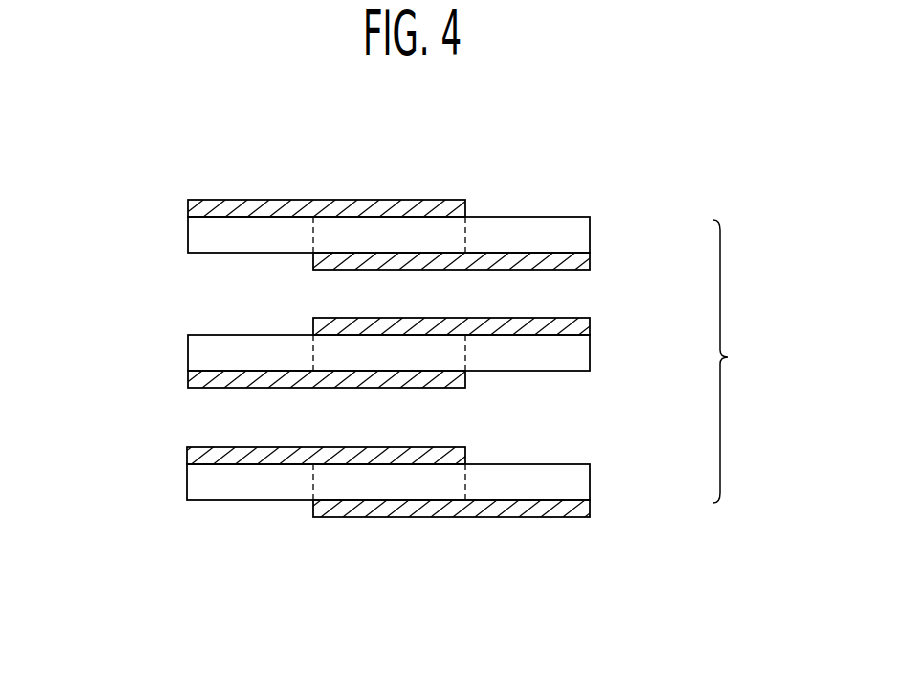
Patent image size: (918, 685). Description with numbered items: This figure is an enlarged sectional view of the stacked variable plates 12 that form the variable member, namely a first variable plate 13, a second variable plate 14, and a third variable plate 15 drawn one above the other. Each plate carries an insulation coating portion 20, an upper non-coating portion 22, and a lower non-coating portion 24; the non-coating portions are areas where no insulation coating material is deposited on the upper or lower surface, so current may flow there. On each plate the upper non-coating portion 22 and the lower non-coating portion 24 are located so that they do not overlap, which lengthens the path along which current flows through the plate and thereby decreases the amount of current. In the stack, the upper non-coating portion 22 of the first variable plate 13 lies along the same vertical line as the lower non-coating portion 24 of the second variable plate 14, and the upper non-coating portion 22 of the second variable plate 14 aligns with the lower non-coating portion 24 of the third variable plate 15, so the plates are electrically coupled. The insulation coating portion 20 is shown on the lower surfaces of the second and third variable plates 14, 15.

The variable plates 12 is at (426, 361).
The first variable plate 13 is at (580, 487).
The second variable plate 14 is at (582, 358).
The third variable plate 15 is at (582, 239).
The insulation coating portion 20 is at (280, 383).
The upper non-coating portion 22 is at (553, 219).
The lower non-coating portion 24 is at (207, 257).